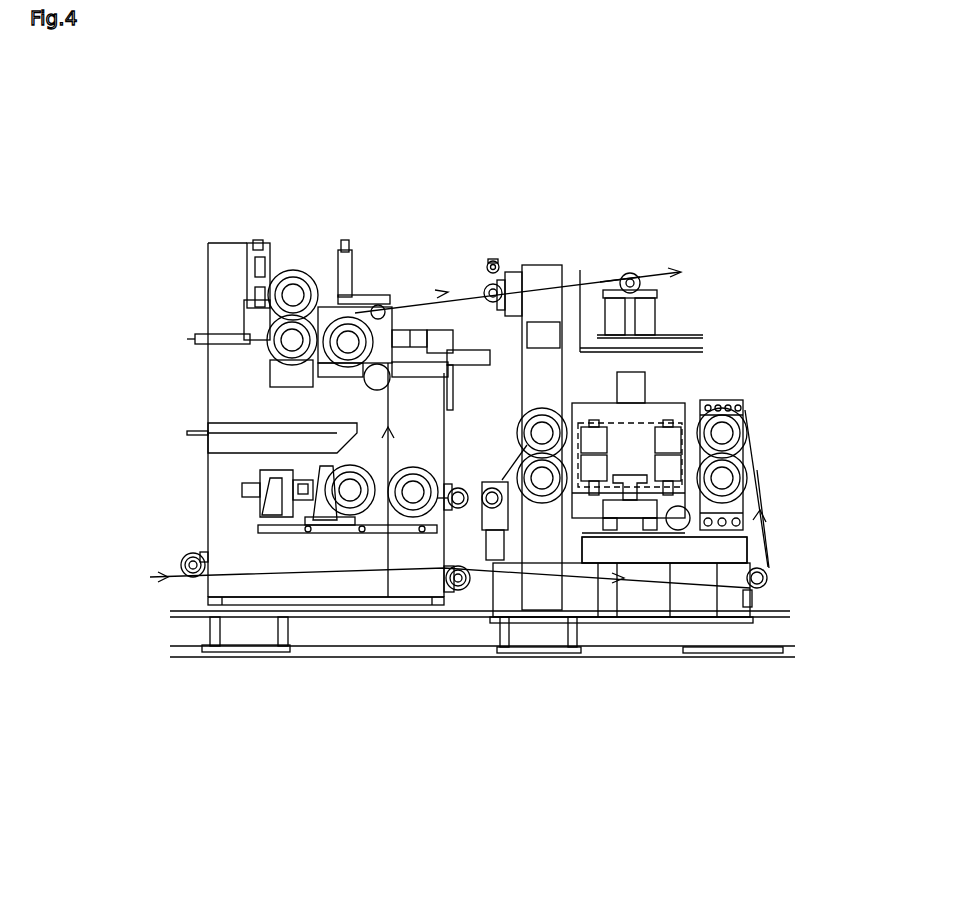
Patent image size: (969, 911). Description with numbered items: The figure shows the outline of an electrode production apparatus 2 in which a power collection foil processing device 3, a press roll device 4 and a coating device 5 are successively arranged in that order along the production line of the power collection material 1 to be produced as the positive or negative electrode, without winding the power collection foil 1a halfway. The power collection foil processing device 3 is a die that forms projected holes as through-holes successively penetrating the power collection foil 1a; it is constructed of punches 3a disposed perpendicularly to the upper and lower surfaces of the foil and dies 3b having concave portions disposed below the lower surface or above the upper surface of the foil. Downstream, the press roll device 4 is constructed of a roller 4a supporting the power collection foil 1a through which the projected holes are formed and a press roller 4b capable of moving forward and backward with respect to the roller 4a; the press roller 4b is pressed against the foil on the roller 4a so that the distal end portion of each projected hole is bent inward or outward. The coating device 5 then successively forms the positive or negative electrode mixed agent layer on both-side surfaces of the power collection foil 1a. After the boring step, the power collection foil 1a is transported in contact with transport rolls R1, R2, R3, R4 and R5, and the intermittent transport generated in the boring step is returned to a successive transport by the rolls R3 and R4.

The power collection material 1 is at (640, 272).
The power collection foil 1a is at (758, 470).
The electrode production apparatus 2 is at (730, 270).
The power collection foil processing device 3 is at (661, 503).
The punches 3a is at (680, 428).
The dies 3b is at (633, 525).
The press roll device 4 is at (340, 622).
The roller 4a is at (412, 518).
The press roller 4b is at (348, 512).
The coating device 5 is at (323, 312).
The transport roll R1 is at (525, 437).
The transport roll R2 is at (542, 503).
The transport roll R3 is at (494, 512).
The transport roll R4 is at (456, 510).
The transport roll R5 is at (381, 368).